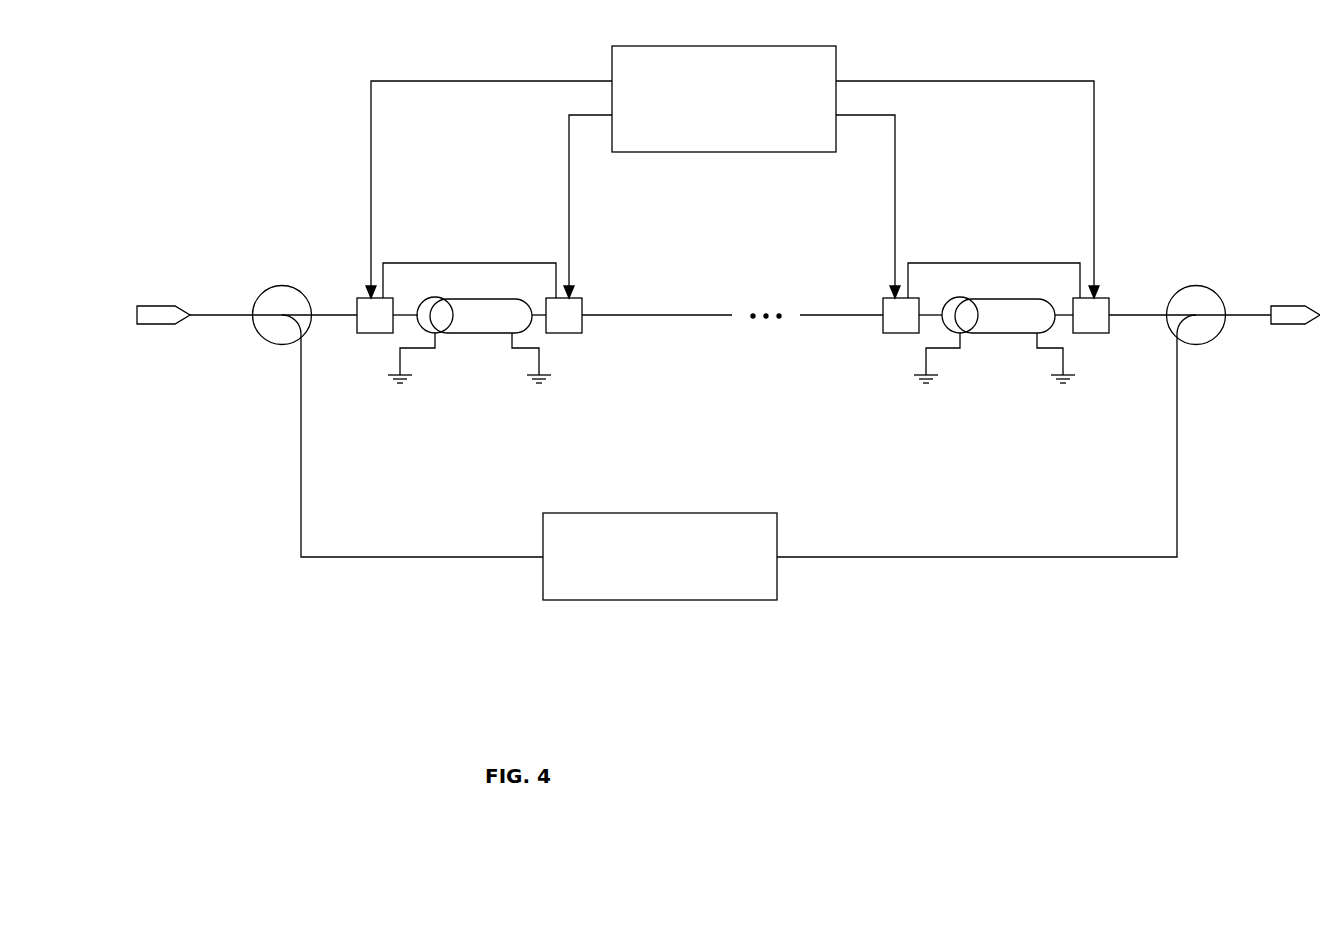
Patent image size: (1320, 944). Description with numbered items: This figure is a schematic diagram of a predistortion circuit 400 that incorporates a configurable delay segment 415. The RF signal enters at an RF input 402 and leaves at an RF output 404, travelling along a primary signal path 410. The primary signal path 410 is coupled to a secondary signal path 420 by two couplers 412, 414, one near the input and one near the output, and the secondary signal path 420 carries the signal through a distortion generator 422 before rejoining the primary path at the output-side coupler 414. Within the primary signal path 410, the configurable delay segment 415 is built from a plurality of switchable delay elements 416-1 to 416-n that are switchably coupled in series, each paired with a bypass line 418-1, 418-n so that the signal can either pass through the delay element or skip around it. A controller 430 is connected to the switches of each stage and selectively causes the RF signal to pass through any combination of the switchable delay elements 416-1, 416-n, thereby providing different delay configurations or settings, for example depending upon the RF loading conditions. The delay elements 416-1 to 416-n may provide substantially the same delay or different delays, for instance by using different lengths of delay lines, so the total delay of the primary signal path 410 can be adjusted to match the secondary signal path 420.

The predistortion circuit 400 is at (152, 193).
The RF input 402 is at (155, 305).
The RF output 404 is at (1300, 305).
The primary signal path 410 is at (298, 213).
The coupler 412 is at (262, 291).
The coupler 414 is at (1172, 291).
The configurable delay segment 415 is at (1120, 409).
The switchable delay element 416-1 is at (470, 333).
The switchable delay element 416-n is at (994, 333).
The bypass line 418-1 is at (460, 263).
The bypass line 418-n is at (992, 263).
The secondary signal path 420 is at (245, 469).
The distortion generator 422 is at (595, 513).
The controller 430 is at (735, 153).